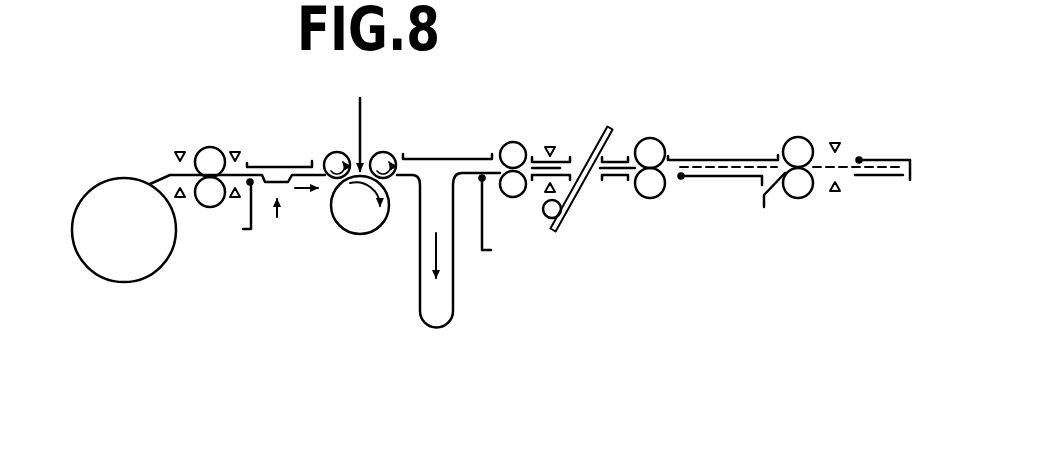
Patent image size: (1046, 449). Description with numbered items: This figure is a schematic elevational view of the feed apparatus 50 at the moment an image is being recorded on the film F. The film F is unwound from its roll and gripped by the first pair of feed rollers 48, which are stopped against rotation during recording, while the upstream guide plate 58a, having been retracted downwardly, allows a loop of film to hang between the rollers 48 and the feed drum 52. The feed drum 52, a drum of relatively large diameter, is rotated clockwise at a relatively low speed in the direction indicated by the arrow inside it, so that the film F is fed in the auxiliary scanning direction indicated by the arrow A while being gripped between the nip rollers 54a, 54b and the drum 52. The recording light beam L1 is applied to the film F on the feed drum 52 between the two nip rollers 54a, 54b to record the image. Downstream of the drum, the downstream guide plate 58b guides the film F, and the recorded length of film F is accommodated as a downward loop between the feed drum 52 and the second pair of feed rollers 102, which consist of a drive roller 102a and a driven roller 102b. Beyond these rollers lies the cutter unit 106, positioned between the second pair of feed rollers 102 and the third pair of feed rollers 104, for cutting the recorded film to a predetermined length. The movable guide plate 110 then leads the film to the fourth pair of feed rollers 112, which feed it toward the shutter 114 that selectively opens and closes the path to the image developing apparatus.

The film F is at (137, 273).
The first pair of feed rollers 48 is at (212, 148).
The upstream guide plate 58a is at (247, 212).
The auxiliary scanning direction A is at (297, 203).
The feed apparatus 50 is at (359, 206).
The nip roller 54a is at (331, 154).
The nip roller 54b is at (386, 152).
The feed drum 52 is at (358, 235).
The recording light beam L1 is at (363, 110).
The downstream guide plate 58b is at (485, 228).
The second pair of feed rollers 102 is at (519, 156).
The driven roller 102b is at (508, 143).
The drive roller 102a is at (520, 198).
The cutter unit 106 is at (602, 137).
The third pair of feed rollers 104 is at (647, 138).
The movable guide plate 110 is at (717, 178).
The fourth pair of feed rollers 112 is at (798, 136).
The shutter 114 is at (887, 157).